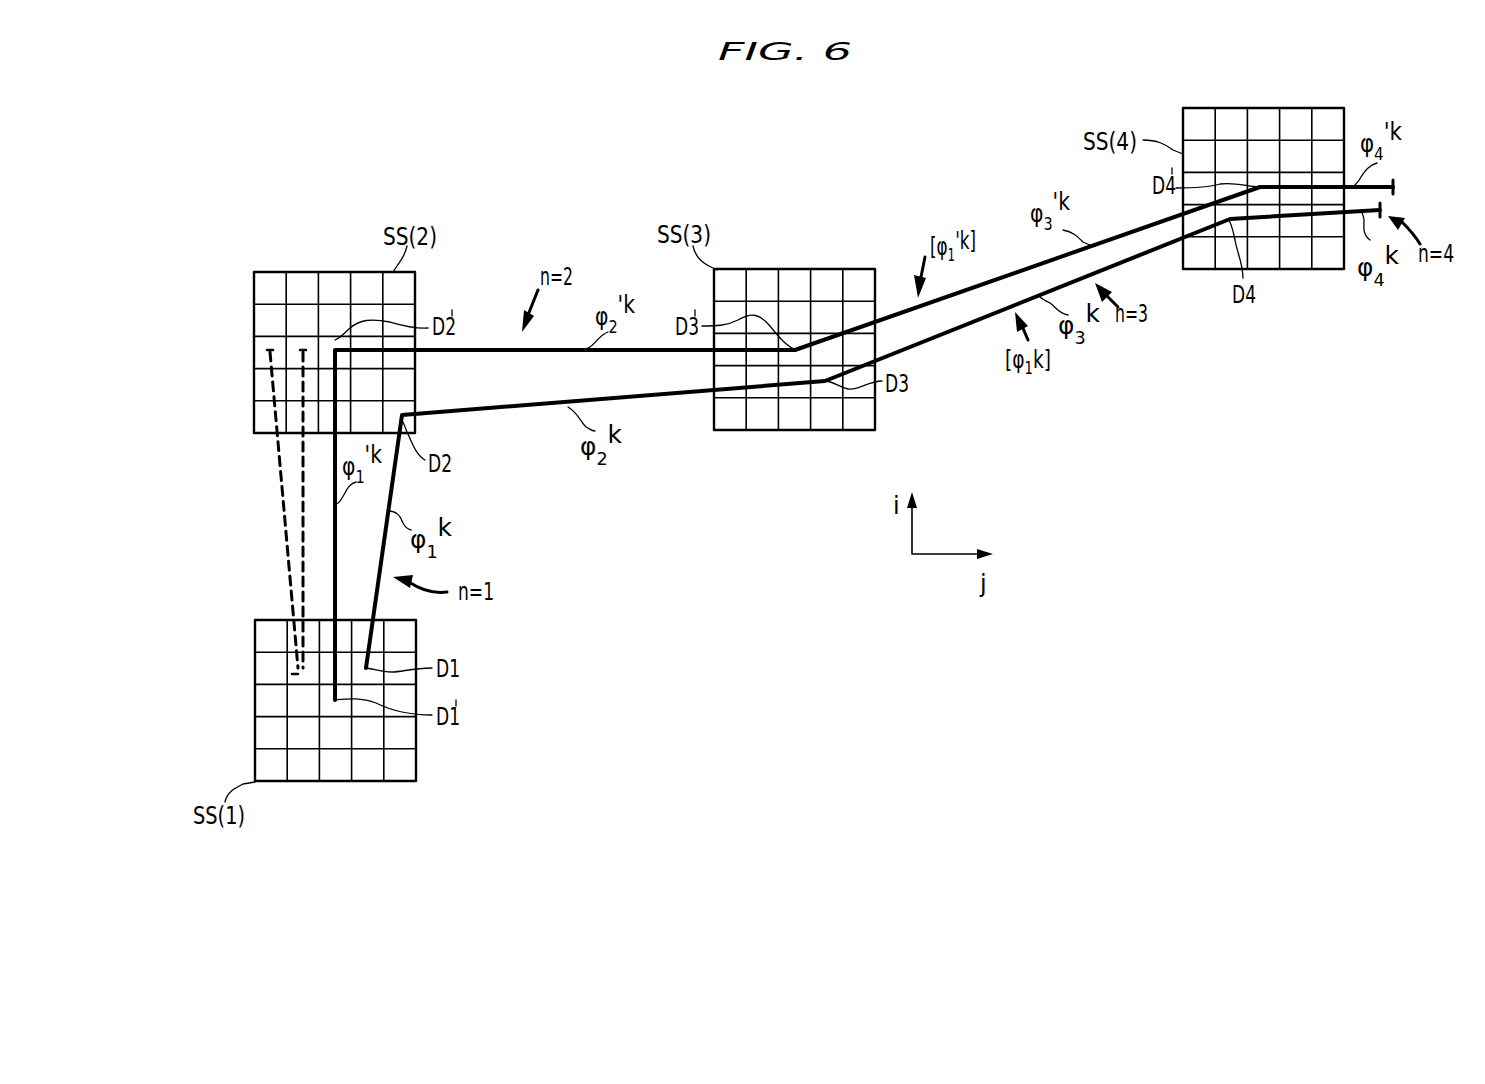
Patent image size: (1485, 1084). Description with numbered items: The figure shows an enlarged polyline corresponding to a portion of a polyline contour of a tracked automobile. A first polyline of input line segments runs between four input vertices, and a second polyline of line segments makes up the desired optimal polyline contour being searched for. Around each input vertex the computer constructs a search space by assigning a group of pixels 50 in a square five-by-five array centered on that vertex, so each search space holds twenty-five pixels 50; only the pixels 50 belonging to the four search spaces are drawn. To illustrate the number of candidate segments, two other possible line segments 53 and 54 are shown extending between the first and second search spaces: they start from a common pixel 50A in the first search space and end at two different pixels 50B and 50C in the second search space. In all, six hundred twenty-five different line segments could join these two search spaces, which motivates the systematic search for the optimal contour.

The pixels 50 is at (362, 280).
The common pixel 50A is at (296, 675).
The pixel 50B is at (270, 352).
The pixel 50C is at (303, 352).
The line segment 53 is at (288, 517).
The line segment 54 is at (302, 538).